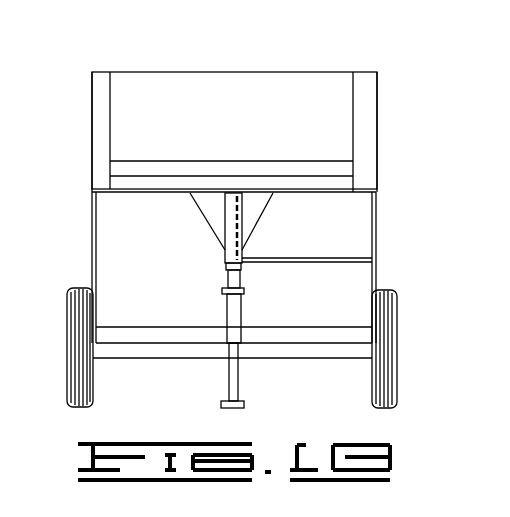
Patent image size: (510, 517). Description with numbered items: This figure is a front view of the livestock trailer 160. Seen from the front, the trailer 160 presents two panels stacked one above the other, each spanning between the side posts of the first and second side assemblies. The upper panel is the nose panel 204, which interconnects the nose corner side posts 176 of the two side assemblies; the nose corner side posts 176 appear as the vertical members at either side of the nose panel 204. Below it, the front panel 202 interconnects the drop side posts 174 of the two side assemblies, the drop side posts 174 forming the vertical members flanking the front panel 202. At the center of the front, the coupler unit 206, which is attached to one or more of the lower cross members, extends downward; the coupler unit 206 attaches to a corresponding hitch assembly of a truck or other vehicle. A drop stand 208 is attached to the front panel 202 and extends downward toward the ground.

The livestock trailer 160 is at (309, 46).
The drop side post 174 is at (376, 213).
The nose corner side post 176 is at (375, 102).
The front panel 202 is at (171, 266).
The nose panel 204 is at (248, 118).
The coupler unit 206 is at (223, 278).
The drop stand 208 is at (232, 385).